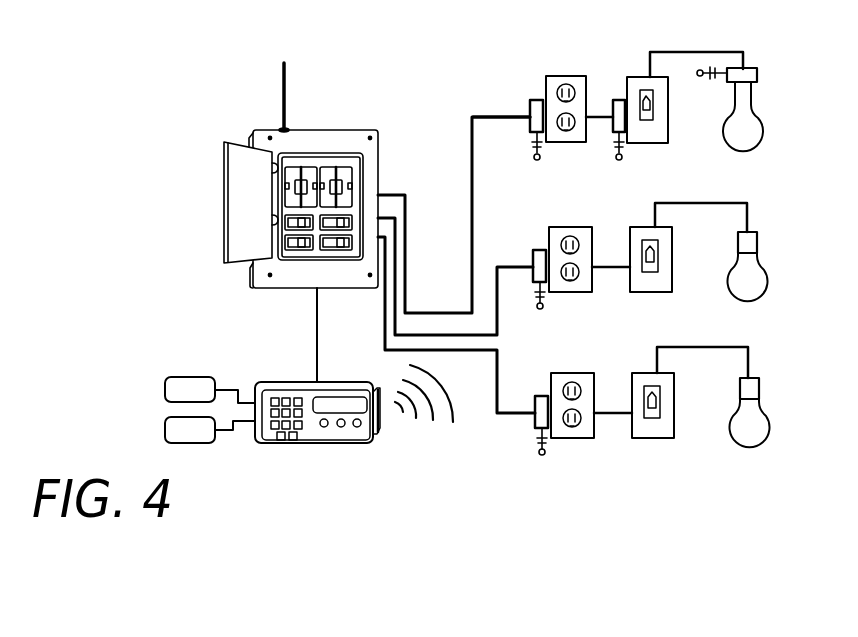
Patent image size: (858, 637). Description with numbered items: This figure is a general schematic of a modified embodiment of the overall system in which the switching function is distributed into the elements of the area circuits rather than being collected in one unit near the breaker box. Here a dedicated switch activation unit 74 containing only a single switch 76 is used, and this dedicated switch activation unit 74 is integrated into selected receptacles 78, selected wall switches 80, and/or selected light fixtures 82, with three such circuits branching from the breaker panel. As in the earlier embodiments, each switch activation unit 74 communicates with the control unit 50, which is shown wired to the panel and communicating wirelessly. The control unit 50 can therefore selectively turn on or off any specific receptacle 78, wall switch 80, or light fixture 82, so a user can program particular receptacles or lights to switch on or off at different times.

The control unit 50 is at (343, 443).
The dedicated switch activation unit 74 is at (530, 112).
The switch 76 is at (535, 100).
The receptacle 78 is at (571, 142).
The wall switch 80 is at (633, 77).
The light fixture 82 is at (758, 76).